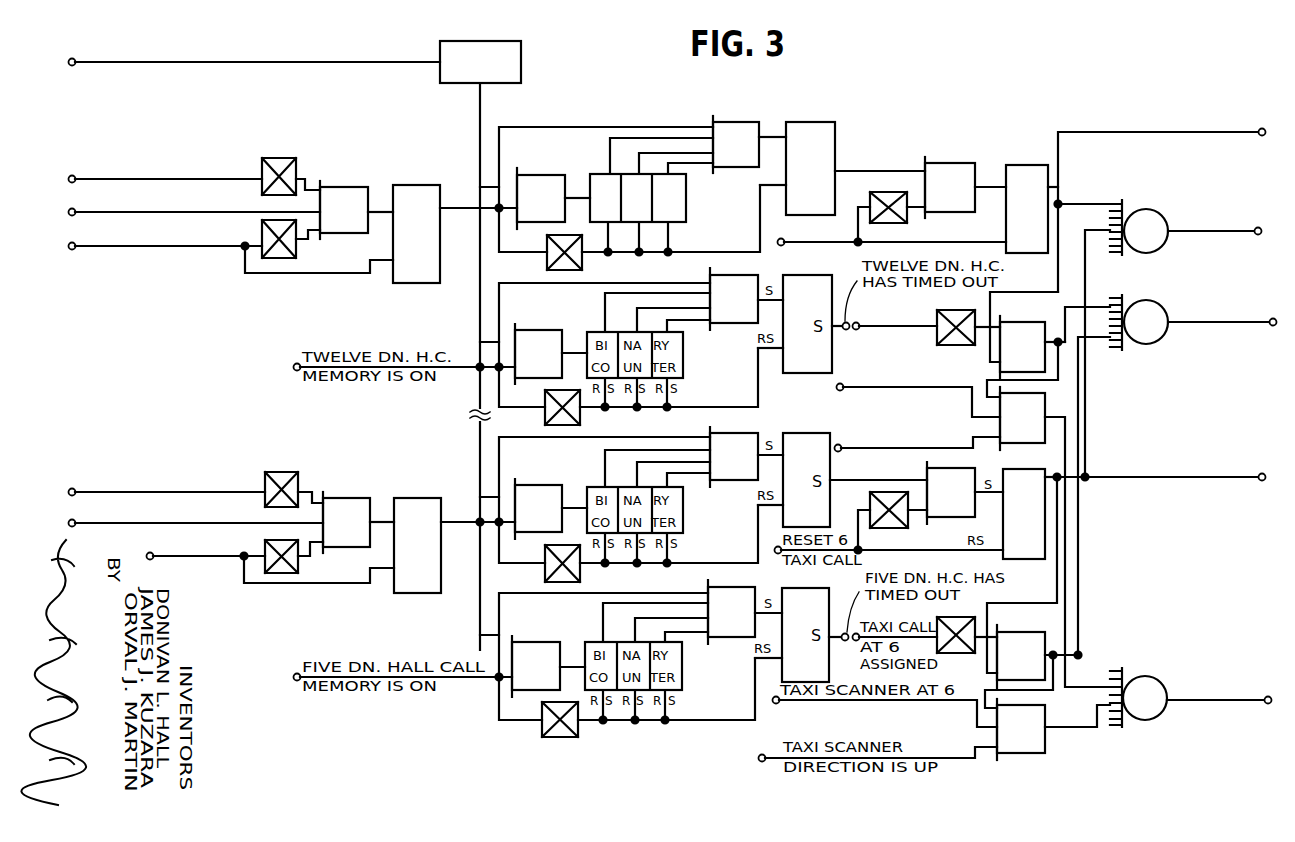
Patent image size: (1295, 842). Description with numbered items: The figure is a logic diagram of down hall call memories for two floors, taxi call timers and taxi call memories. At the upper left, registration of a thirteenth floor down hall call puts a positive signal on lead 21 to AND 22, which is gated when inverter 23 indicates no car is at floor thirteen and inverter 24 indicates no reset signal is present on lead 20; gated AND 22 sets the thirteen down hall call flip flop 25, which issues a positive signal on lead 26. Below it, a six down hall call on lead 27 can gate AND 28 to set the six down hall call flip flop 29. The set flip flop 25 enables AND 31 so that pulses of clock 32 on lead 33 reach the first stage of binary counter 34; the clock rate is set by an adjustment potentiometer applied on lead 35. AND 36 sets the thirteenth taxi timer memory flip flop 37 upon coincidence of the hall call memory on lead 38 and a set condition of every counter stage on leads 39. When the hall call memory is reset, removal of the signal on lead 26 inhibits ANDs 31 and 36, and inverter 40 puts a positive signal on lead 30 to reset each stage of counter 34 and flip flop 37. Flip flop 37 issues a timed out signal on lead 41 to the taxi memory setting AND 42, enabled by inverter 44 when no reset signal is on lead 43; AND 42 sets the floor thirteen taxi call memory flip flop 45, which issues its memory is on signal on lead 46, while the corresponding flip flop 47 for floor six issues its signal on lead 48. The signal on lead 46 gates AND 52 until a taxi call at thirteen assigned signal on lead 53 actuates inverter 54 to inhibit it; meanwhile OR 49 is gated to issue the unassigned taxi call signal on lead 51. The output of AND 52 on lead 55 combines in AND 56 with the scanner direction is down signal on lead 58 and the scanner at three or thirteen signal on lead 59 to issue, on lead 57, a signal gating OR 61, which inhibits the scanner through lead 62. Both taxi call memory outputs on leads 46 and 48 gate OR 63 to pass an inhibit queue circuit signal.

The reset lead 20 is at (224, 247).
The thirteen down hall call lead 21 is at (318, 192).
The AND gate 22 is at (363, 214).
The inverter 23 is at (293, 160).
The inverter 24 is at (288, 256).
The thirteen down hall call flip flop 25 is at (435, 236).
The output lead 26 is at (469, 206).
The six down hall call lead 27 is at (236, 524).
The AND gate 28 is at (365, 525).
The six down hall call flip flop 29 is at (436, 547).
The reset lead 30 is at (697, 252).
The AND gate 31 is at (559, 201).
The clock 32 is at (521, 66).
The clock pulse lead 33 is at (481, 98).
The binary counter 34 is at (688, 192).
The adjustment potentiometer lead 35 is at (362, 62).
The AND gate 36 is at (755, 147).
The thirteenth taxi timer memory flip flop 37 is at (829, 170).
The hall call memory lead 38 is at (538, 127).
The counter stage output leads 39 is at (667, 162).
The inverter 40 is at (575, 268).
The set lead 41 is at (860, 171).
The taxi memory setting AND gate 42 is at (967, 190).
The reset 13 taxi call lead 43 is at (920, 234).
The inverter 44 is at (871, 196).
The floor thirteen taxi call memory flip flop 45 is at (1032, 209).
The floor thirteen taxi call memory output lead 46 is at (1246, 136).
The floor six taxi call memory flip flop 47 is at (1045, 517).
The floor six taxi call memory output lead 48 is at (1258, 481).
The OR gate 49 is at (1165, 325).
The unassigned taxi call lead 51 is at (1271, 327).
The AND gate 52 is at (1043, 349).
The taxi call at thirteen assigned lead 53 is at (930, 322).
The inverter 54 is at (941, 310).
The unassigned taxi call at thirteen lead 55 is at (987, 385).
The AND gate 56 is at (1043, 421).
The output lead 57 is at (1052, 416).
The taxi scanner direction is down lead 58 is at (982, 439).
The taxi scanner is at three or thirteen lead 59 is at (972, 401).
The OR gate 61 is at (1164, 701).
The inhibit lead 62 is at (1172, 704).
The OR gate 63 is at (1165, 234).